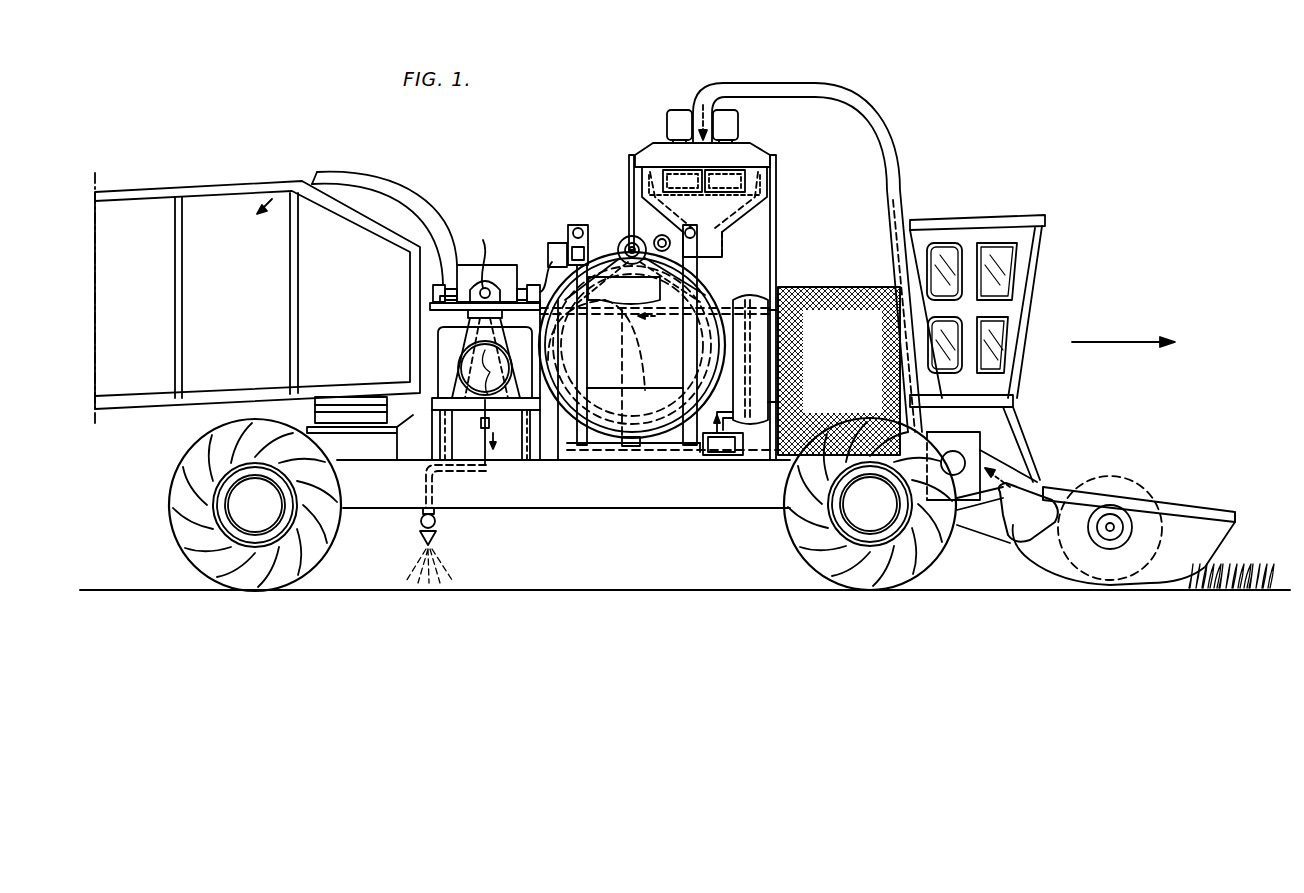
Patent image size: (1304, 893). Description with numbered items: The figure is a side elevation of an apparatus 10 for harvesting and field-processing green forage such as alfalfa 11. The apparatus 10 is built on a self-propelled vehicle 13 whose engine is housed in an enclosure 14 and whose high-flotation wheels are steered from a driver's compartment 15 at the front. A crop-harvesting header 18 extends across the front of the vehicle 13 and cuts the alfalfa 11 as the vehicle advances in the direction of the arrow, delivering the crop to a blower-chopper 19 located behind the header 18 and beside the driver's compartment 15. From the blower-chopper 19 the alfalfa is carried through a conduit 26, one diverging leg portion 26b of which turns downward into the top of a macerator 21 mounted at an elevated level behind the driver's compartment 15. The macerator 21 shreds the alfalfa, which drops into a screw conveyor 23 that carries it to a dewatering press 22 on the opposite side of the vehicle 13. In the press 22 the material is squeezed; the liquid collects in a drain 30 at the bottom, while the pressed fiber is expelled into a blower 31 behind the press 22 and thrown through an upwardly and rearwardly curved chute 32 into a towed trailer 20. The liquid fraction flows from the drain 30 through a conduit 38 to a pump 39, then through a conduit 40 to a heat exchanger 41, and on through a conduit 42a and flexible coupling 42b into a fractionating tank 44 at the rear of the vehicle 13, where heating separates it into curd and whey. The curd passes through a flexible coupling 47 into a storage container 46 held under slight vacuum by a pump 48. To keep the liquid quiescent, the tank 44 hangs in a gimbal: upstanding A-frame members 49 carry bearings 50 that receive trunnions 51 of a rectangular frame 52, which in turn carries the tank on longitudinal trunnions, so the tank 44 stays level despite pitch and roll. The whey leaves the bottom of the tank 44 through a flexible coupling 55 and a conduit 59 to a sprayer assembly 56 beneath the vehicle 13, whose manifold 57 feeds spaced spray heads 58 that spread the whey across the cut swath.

The apparatus 10 is at (934, 204).
The alfalfa 11 is at (1233, 553).
The self-propelled vehicle 13 is at (678, 500).
The enclosure 14 is at (847, 287).
The driver's compartment 15 is at (1028, 258).
The crop-harvesting header 18 is at (1193, 510).
The blower-chopper 19 is at (977, 448).
The trailer 20 is at (151, 403).
The macerator 21 is at (763, 192).
The dewatering press 22 is at (631, 386).
The screw conveyor 23 is at (661, 238).
The conduit 26 is at (900, 193).
The diverging leg portion 26b is at (747, 88).
The drain 30 is at (628, 446).
The blower 31 is at (440, 345).
The chute 32 is at (413, 206).
The conduit 38 is at (683, 452).
The pump 39 is at (716, 456).
The conduit 40 is at (738, 428).
The heat exchanger 41 is at (746, 296).
The conduit 42a is at (640, 312).
The flexible coupling 42b is at (550, 325).
The fractionating tank 44 is at (487, 265).
The storage container 46 is at (557, 433).
The flexible coupling 47 is at (531, 262).
The pump 48 is at (557, 243).
The A-frame members 49 is at (472, 311).
The bearings 50 is at (481, 290).
The trunnions 51 is at (483, 262).
The rectangular frame 52 is at (440, 301).
The flexible coupling 55 is at (483, 416).
The sprayer assembly 56 is at (418, 516).
The manifold 57 is at (436, 520).
The spray heads 58 is at (433, 539).
The conduit 59 is at (482, 470).